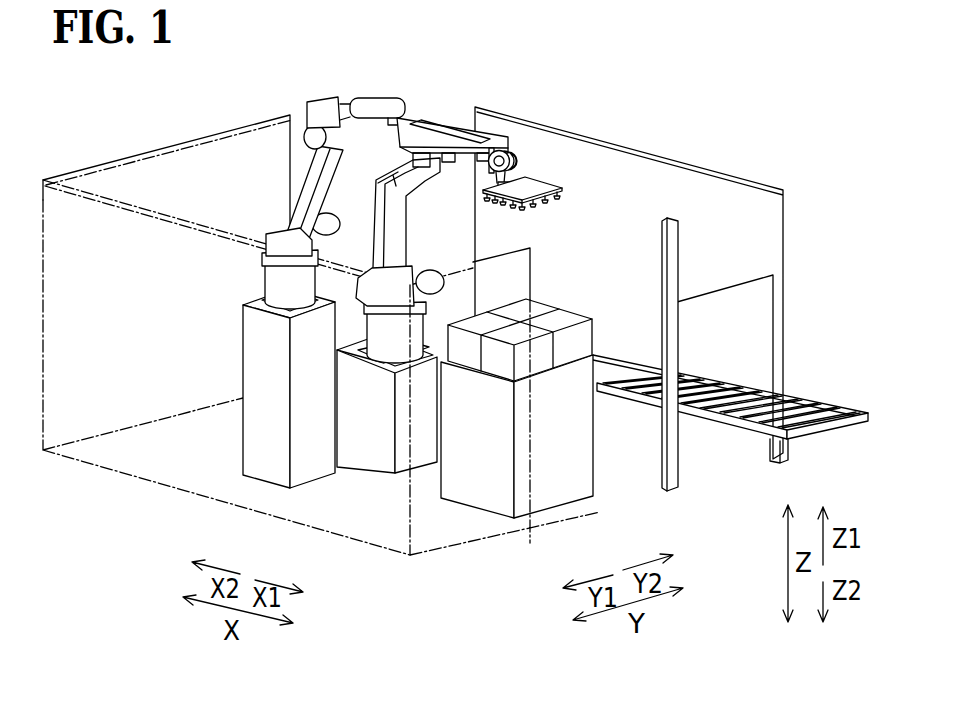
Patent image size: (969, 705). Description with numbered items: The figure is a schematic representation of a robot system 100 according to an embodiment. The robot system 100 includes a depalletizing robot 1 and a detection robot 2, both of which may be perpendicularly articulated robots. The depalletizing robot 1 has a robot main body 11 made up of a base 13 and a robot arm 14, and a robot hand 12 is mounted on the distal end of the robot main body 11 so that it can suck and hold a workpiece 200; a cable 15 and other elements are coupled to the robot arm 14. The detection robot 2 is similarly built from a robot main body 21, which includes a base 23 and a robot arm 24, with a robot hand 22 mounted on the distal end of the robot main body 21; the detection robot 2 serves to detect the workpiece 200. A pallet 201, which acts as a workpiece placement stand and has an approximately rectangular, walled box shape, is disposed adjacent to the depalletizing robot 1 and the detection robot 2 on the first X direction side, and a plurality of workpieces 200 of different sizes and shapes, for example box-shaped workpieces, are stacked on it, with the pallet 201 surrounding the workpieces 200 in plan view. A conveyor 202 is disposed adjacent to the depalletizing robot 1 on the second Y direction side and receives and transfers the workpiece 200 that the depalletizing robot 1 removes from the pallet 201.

The robot system 100 is at (696, 95).
The depalletizing robot 1 is at (393, 340).
The detection robot 2 is at (313, 277).
The robot main body 11 is at (400, 187).
The robot hand 12 is at (533, 190).
The base 13 is at (366, 455).
The robot arm 14 is at (397, 230).
The cable 15 is at (377, 202).
The robot main body 21 is at (287, 187).
The robot hand 22 is at (430, 128).
The base 23 is at (323, 483).
The robot arm 24 is at (293, 211).
The workpiece 200 is at (532, 310).
The pallet 201 is at (575, 493).
The conveyor 202 is at (795, 390).